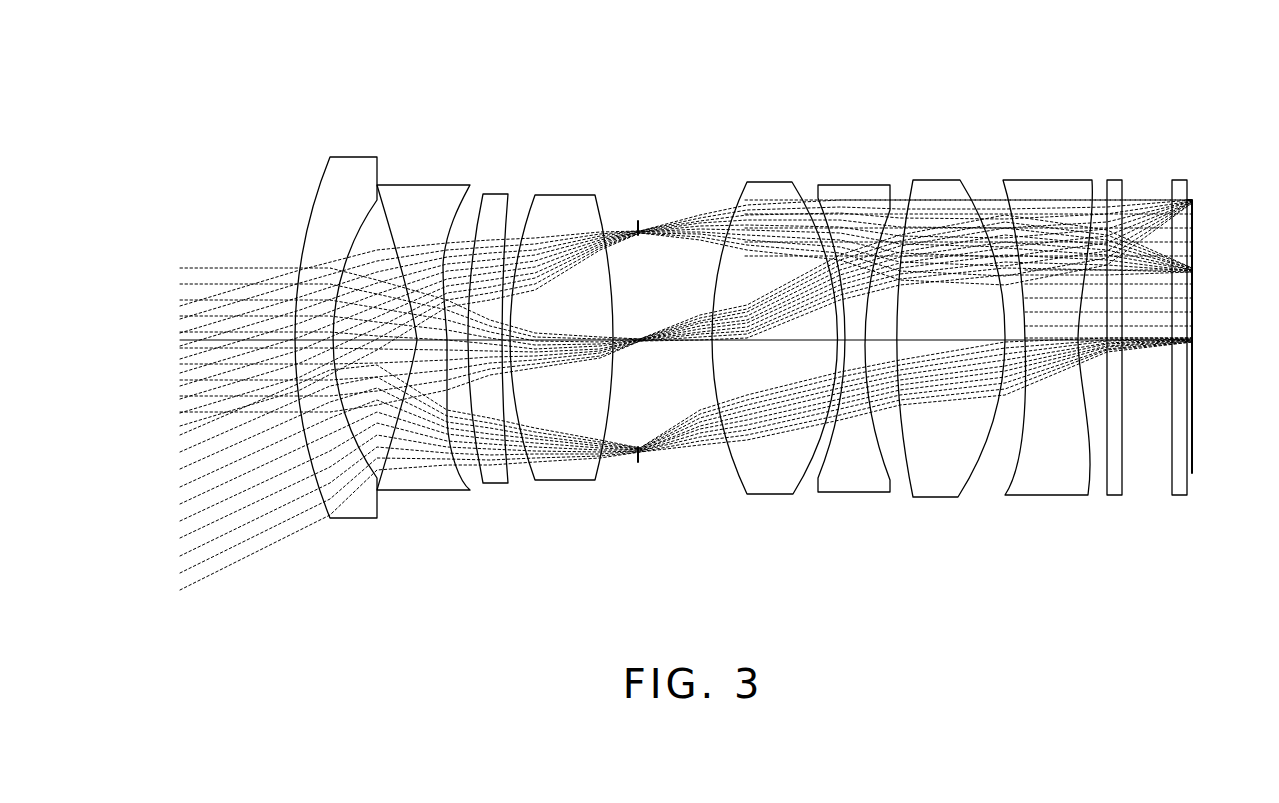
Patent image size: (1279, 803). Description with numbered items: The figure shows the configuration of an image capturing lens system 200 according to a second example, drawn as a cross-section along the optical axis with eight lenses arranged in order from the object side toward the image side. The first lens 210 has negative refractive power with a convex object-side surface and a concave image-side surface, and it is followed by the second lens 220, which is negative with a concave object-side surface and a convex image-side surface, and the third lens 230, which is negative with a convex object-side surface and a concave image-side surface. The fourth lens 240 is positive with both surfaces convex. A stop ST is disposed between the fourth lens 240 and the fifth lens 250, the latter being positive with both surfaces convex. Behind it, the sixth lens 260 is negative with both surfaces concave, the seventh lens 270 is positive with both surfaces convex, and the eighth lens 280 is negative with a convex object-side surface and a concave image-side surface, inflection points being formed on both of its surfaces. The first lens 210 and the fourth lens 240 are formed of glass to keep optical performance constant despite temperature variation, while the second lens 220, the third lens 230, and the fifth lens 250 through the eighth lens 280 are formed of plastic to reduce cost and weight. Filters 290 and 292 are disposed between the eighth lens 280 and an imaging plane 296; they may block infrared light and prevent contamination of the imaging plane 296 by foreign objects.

The image capturing lens system 200 is at (697, 135).
The stop ST is at (640, 218).
The first lens 210 is at (352, 510).
The second lens 220 is at (420, 482).
The third lens 230 is at (497, 476).
The fourth lens 240 is at (565, 474).
The fifth lens 250 is at (765, 487).
The sixth lens 260 is at (855, 484).
The seventh lens 270 is at (937, 490).
The eighth lens 280 is at (1055, 488).
The filter 290 is at (1118, 490).
The filter 292 is at (1182, 490).
The imaging plane 296 is at (1195, 466).